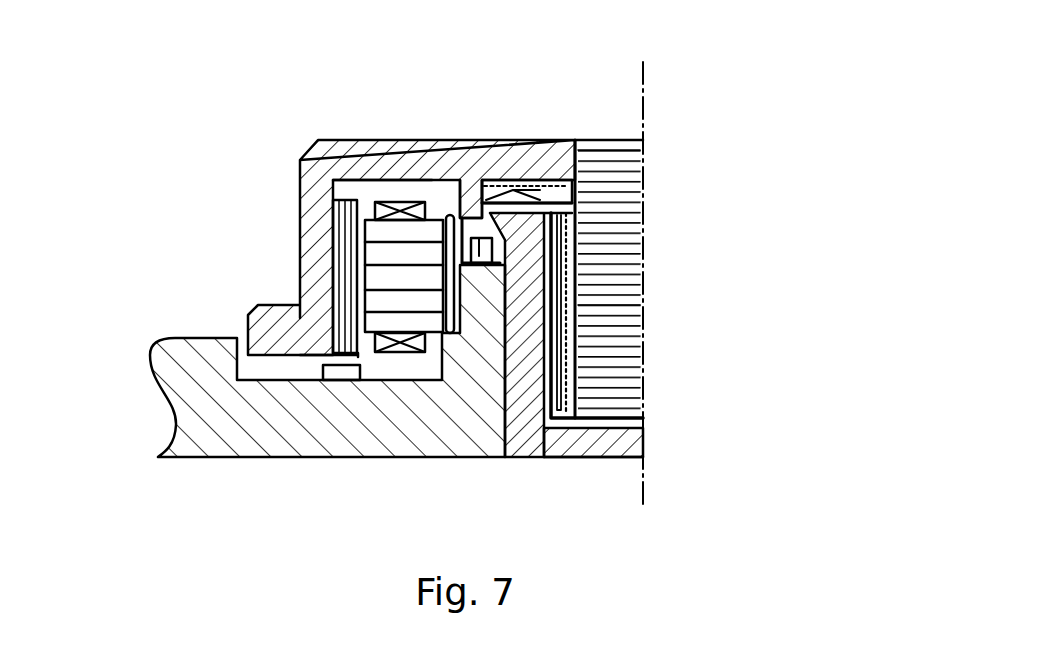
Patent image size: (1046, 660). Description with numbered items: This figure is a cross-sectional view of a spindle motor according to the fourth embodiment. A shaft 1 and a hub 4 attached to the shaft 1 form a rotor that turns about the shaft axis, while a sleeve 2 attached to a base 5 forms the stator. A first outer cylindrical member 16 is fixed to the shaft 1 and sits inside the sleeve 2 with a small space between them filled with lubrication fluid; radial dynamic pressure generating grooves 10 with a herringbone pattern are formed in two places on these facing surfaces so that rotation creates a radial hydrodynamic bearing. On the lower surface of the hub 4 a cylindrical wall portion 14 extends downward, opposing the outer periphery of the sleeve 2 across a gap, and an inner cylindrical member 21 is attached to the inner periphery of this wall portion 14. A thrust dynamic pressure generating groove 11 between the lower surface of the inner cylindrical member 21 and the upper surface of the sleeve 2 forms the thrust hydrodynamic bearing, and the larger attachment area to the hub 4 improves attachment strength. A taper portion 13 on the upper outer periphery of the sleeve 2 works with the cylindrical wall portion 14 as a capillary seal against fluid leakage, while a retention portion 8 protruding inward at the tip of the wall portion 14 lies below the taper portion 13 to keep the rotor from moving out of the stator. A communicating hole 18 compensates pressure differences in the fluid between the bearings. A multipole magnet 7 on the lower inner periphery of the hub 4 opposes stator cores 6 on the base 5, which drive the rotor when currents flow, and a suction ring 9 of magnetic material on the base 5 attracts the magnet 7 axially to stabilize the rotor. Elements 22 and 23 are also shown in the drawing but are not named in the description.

The shaft 1 is at (617, 378).
The sleeve 2 is at (523, 383).
The hub 4 is at (313, 218).
The base 5 is at (207, 432).
The stator core 6 is at (413, 228).
The magnet 7 is at (343, 274).
The retention portion 8 is at (478, 262).
The suction ring 9 is at (340, 383).
The radial dynamic pressure generating grooves 10 is at (580, 357).
The thrust dynamic pressure generating groove 11 is at (458, 207).
The taper portion 13 is at (578, 175).
The cylindrical wall portion 14 is at (450, 208).
The first outer cylindrical member 16 is at (580, 236).
The communicating hole 18 is at (580, 305).
The inner cylindrical member 21 is at (522, 188).
The projection 22 is at (453, 178).
The gap 23 is at (580, 216).